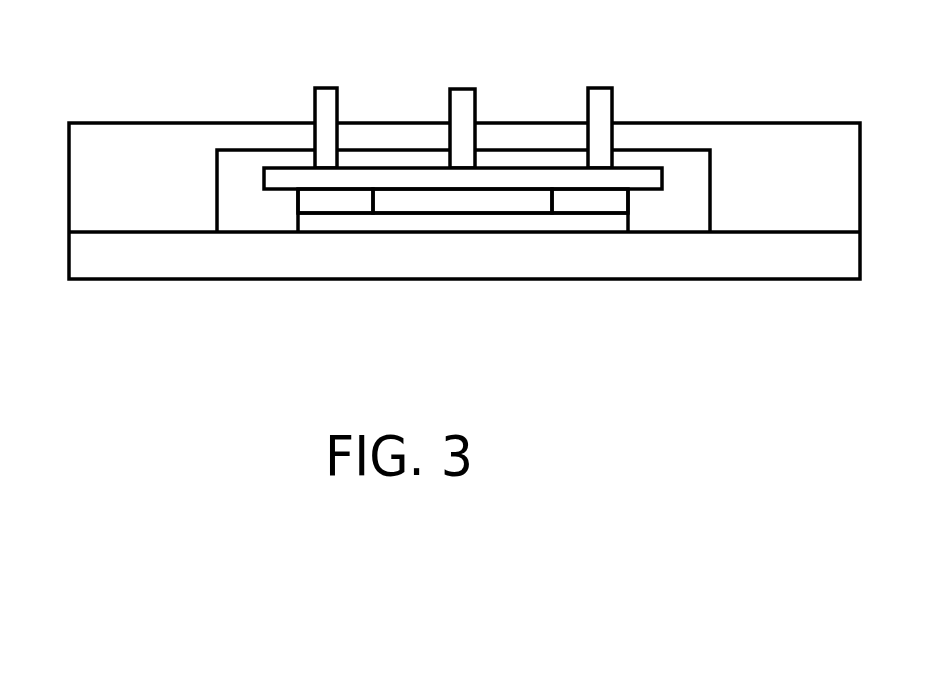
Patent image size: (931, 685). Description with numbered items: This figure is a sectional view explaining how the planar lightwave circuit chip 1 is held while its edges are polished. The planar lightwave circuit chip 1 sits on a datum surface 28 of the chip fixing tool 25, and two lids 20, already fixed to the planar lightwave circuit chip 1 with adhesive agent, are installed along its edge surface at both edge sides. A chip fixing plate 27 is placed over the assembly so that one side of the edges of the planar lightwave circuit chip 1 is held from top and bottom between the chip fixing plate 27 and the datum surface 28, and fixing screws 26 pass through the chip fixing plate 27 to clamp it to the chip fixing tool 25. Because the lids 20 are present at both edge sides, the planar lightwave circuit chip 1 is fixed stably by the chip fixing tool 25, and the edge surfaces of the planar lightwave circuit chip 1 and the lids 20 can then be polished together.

The planar lightwave circuit chip 1 is at (463, 223).
The lid 20 is at (333, 202).
The chip fixing tool 25 is at (682, 257).
The fixing screw 26 is at (327, 97).
The chip fixing plate 27 is at (292, 178).
The datum surface 28 is at (253, 233).